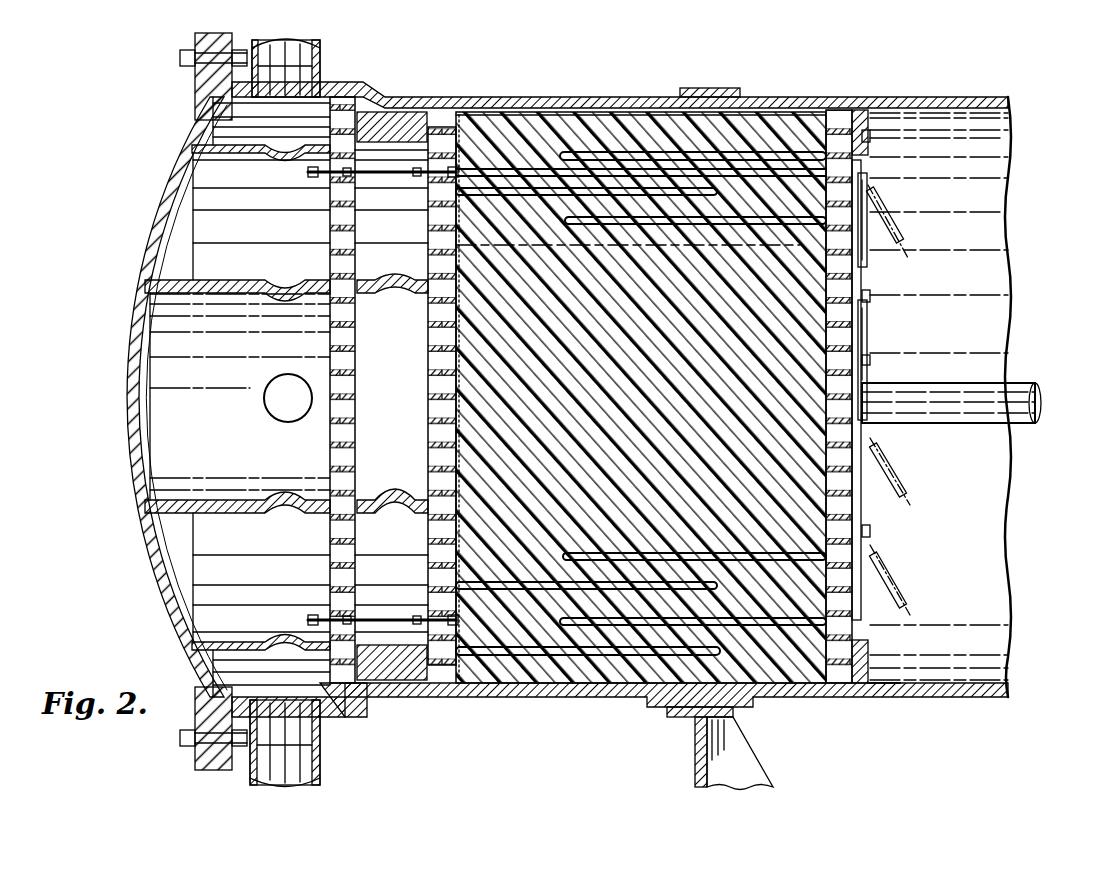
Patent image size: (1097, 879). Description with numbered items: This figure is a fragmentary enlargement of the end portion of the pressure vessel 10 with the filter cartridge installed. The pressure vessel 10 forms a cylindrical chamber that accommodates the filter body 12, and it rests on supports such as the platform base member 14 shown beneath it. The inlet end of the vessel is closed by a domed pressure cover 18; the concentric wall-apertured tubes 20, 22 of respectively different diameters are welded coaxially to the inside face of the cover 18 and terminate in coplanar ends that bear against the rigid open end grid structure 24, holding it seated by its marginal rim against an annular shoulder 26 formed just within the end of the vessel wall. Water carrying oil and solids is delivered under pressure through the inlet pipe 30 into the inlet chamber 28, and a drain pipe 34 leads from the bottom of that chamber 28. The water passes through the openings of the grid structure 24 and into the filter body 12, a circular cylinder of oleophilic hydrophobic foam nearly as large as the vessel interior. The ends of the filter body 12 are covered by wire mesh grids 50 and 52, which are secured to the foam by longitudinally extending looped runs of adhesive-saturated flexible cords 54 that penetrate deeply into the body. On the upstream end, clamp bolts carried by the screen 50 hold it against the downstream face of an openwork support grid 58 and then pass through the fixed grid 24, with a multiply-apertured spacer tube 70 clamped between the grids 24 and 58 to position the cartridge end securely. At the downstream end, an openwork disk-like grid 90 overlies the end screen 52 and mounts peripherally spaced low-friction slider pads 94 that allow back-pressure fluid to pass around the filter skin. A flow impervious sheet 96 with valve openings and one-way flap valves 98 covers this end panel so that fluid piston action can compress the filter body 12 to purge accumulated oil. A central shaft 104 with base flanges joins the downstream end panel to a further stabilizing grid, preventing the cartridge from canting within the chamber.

The pressure vessel 10 is at (424, 96).
The filter body 12 is at (590, 128).
The platform base member 14 is at (694, 752).
The domed pressure cover 18 is at (160, 203).
The support rings 20 is at (222, 286).
The liner cylinder 22 is at (197, 150).
The filter cartridge end grid structure 24 is at (360, 237).
The annular shoulder 26 is at (350, 703).
The inlet chamber 28 is at (168, 347).
The inlet pipe 30 is at (322, 56).
The outlet or drain pipe 34 is at (322, 763).
The wire mesh grid 50 is at (440, 382).
The wire mesh grid 52 is at (862, 508).
The adhesive-saturated flexible cords 54 is at (670, 160).
The openwork support grid 58 is at (432, 568).
The multiply-apertured spacer tube 70 is at (376, 500).
The openwork grid 90 is at (868, 312).
The slider pads or wall clearance bearings 94 is at (885, 697).
The flow impervious sheet 96 is at (867, 290).
The one-way flap valves 98 is at (893, 242).
The central shaft 104 is at (985, 388).